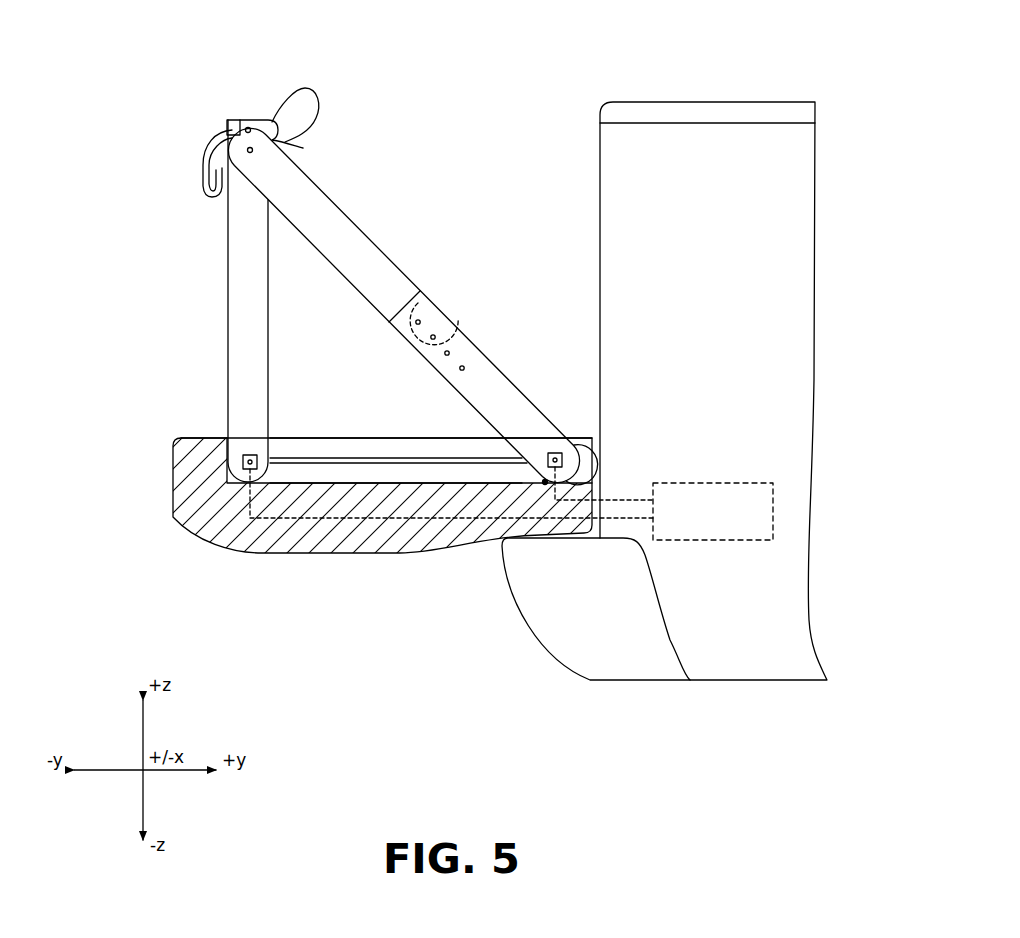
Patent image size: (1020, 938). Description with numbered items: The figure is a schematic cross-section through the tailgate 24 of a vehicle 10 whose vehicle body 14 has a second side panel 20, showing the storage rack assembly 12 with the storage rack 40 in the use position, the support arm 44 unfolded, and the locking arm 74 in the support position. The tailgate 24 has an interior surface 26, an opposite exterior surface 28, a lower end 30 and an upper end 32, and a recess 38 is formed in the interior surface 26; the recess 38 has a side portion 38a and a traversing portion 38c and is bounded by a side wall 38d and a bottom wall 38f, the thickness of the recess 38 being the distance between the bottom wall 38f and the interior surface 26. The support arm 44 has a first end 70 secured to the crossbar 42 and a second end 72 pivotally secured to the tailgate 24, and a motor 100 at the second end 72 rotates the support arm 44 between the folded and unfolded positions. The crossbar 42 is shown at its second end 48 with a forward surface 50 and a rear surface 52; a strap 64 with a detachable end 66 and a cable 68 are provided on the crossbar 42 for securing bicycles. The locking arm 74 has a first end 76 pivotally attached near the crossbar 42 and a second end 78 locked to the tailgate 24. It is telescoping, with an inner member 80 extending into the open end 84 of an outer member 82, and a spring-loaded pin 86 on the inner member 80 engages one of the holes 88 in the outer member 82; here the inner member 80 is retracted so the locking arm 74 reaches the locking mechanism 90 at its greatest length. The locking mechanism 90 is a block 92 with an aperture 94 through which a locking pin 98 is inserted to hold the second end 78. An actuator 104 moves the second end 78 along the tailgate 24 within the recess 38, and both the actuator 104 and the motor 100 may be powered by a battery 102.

The vehicle 10 is at (678, 752).
The storage rack assembly 12 is at (100, 474).
The vehicle body 14 is at (616, 715).
The second side panel 20 is at (615, 152).
The tailgate 24 is at (135, 540).
The interior surface 26 is at (203, 438).
The exterior surface 28 is at (277, 553).
The lower end 30 is at (603, 493).
The upper end 32 is at (173, 445).
The recess 38 is at (343, 450).
The side portion 38a is at (363, 436).
The traversing portion 38c is at (600, 395).
The side wall 38d is at (448, 448).
The bottom wall 38f is at (227, 472).
The storage rack 40 is at (376, 181).
The crossbar 42 is at (221, 112).
The support arm 44 is at (229, 295).
The second end 48 is at (233, 120).
The forward surface 50 is at (280, 143).
The rear surface 52 is at (226, 128).
The strap 64 is at (203, 178).
The detachable end 66 is at (204, 146).
The cable 68 is at (302, 88).
The first end 70 is at (232, 120).
The second end 72 is at (272, 440).
The locking arm 74 is at (481, 309).
The first end 76 is at (250, 126).
The second end 78 is at (592, 495).
The inner member 80 is at (367, 239).
The outer member 82 is at (513, 383).
The open end 84 is at (418, 292).
The spring-loaded pin 86 is at (412, 328).
The holes 88 is at (418, 320).
The locking mechanism 90 is at (545, 485).
The block 92 is at (545, 455).
The aperture 94 is at (580, 468).
The locking pin 98 is at (580, 430).
The motor 100 is at (243, 467).
The battery 102 is at (718, 483).
The actuator 104 is at (406, 460).